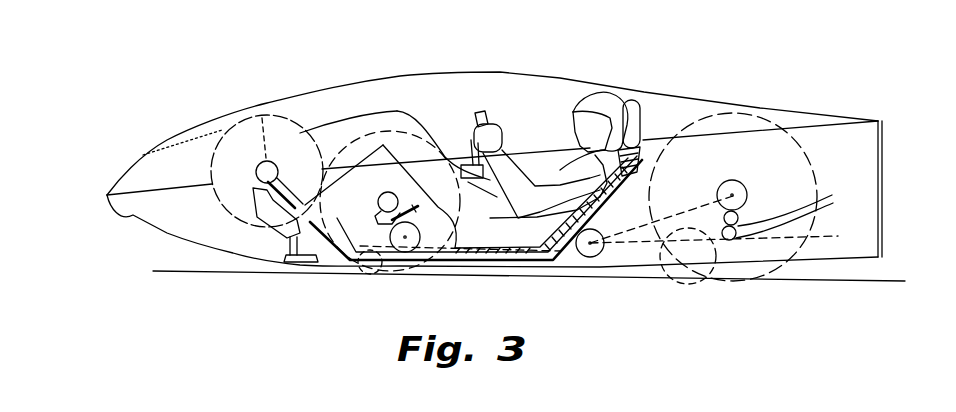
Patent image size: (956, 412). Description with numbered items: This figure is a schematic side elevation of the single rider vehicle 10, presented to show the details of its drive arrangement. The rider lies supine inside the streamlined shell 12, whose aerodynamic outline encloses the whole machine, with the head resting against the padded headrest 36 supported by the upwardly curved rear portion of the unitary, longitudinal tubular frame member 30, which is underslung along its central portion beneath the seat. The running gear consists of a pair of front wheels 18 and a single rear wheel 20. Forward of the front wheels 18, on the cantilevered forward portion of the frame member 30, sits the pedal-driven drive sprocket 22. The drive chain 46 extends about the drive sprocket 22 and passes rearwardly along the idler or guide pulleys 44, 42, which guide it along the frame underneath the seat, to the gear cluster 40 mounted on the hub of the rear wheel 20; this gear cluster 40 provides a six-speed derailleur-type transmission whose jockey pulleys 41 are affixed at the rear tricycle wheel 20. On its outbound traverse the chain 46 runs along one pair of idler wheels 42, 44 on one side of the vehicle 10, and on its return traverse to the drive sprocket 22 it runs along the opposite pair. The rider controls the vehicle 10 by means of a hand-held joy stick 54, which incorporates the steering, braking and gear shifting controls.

The single rider vehicle 10 is at (113, 57).
The streamlined shell 12 is at (178, 121).
The front wheels 18 is at (420, 272).
The rear wheel 20 is at (758, 117).
The drive sprocket 22 is at (229, 128).
The frame member 30 is at (479, 264).
The padded headrest 36 is at (643, 112).
The gear cluster 40 is at (754, 178).
The jockey pulleys 41 is at (826, 206).
The idler pulleys 42 is at (585, 263).
The idler pulleys 44 is at (400, 263).
The drive chain 46 is at (347, 273).
The joy stick 54 is at (483, 104).